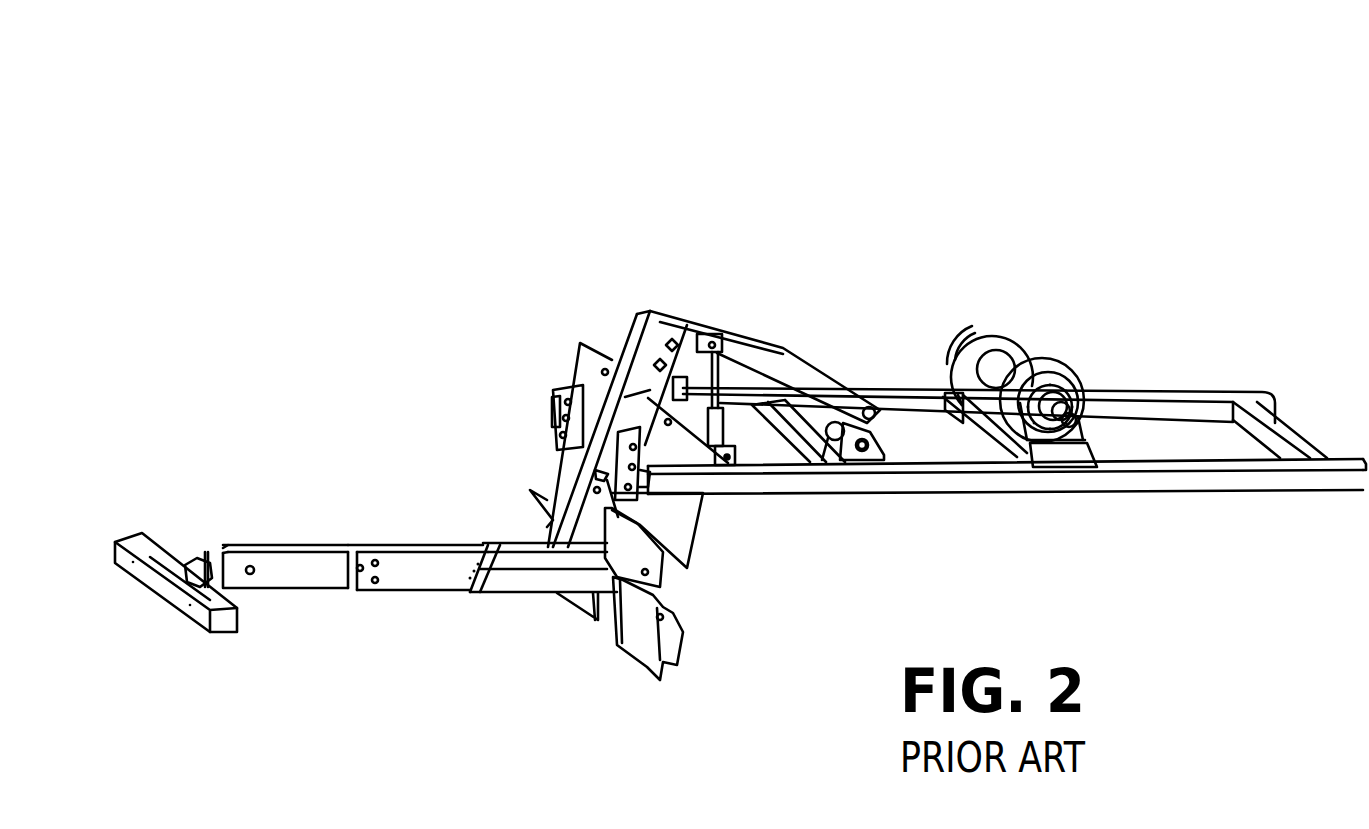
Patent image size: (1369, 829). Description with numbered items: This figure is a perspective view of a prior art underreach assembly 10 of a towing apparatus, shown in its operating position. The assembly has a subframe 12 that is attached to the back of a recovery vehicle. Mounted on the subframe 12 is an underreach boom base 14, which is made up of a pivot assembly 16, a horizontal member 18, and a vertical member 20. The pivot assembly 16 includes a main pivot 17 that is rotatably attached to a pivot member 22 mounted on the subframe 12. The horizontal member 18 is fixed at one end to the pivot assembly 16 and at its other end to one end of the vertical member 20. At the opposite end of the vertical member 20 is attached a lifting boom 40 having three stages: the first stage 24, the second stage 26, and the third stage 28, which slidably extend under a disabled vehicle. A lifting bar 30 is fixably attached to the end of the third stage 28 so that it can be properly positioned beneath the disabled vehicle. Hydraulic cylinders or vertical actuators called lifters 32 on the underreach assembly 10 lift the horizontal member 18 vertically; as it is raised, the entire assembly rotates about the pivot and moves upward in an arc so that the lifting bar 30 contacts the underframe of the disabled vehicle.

The underreach assembly 10 is at (986, 115).
The subframe 12 is at (878, 496).
The underreach boom base 14 is at (631, 317).
The pivot assembly 16 is at (868, 406).
The main pivot 17 is at (826, 462).
The horizontal member 18 is at (752, 335).
The vertical member 20 is at (598, 348).
The pivot member 22 is at (875, 445).
The lifting boom first stage 24 is at (502, 536).
The lifting boom second stage 26 is at (407, 541).
The lifting boom third stage 28 is at (280, 595).
The lifting bar 30 is at (152, 600).
The lifters 32 is at (735, 468).
The lifting boom 40 is at (441, 662).